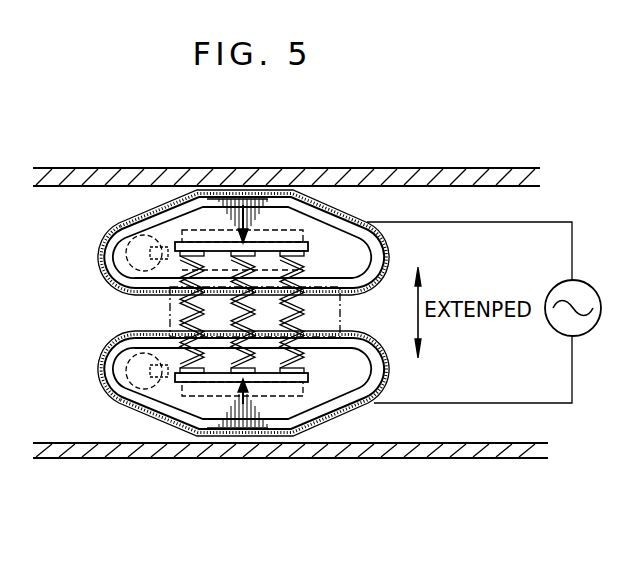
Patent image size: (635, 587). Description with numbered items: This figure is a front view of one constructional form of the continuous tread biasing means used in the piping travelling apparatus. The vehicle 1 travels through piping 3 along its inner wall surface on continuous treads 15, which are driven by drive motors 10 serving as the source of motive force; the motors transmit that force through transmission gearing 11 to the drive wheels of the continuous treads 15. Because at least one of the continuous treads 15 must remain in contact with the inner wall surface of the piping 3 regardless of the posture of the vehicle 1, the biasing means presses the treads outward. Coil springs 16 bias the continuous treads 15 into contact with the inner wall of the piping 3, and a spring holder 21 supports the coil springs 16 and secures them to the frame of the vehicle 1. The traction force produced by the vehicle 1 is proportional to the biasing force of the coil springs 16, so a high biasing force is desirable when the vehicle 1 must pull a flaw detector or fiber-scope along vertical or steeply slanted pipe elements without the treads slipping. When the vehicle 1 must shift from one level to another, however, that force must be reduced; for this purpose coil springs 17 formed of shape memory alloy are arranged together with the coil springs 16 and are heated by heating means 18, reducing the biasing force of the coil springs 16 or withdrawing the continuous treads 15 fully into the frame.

The vehicle 1 is at (117, 218).
The piping 3 is at (388, 178).
The drive motor 10 is at (221, 232).
The transmission gearing 11 is at (145, 243).
The continuous tread 15 is at (373, 404).
The coil spring 16 is at (219, 350).
The coil spring formed of shape memory alloy 17 is at (250, 346).
The heating means 18 is at (586, 289).
The spring holder 21 is at (193, 375).